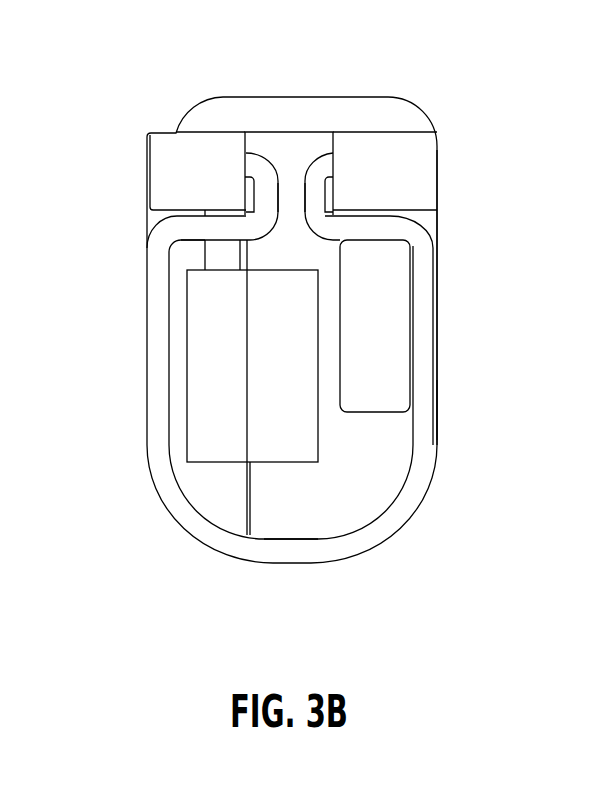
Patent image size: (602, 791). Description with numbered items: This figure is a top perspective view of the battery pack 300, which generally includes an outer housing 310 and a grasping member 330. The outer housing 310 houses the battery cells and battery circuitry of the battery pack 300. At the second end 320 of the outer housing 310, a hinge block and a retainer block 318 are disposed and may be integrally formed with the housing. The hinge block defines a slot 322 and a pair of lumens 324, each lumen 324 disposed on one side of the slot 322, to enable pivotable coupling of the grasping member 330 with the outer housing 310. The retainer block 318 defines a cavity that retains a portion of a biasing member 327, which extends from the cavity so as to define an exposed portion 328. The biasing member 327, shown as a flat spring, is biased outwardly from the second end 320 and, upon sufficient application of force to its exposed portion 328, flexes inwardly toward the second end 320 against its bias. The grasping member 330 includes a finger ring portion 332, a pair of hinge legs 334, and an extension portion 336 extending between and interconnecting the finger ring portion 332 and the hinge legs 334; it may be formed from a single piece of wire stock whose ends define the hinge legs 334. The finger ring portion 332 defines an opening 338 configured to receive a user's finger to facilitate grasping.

The battery pack 300 is at (508, 230).
The outer housing 310 is at (363, 493).
The retainer block 318 is at (213, 392).
The second end 320 is at (308, 522).
The slot 322 is at (313, 145).
The lumen 324 is at (243, 163).
The biasing member 327 is at (213, 270).
The exposed portion 328 is at (213, 253).
The grasping member 330 is at (447, 492).
The finger ring portion 332 is at (428, 288).
The hinge legs 334 is at (262, 163).
The extension portion 336 is at (315, 203).
The opening 338 is at (398, 435).